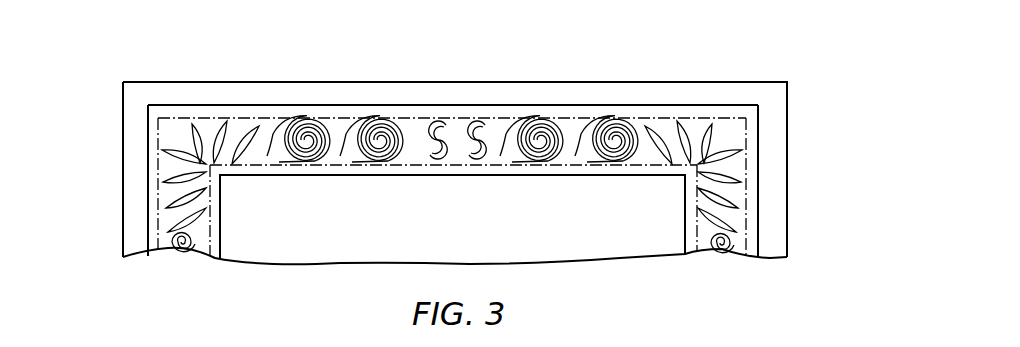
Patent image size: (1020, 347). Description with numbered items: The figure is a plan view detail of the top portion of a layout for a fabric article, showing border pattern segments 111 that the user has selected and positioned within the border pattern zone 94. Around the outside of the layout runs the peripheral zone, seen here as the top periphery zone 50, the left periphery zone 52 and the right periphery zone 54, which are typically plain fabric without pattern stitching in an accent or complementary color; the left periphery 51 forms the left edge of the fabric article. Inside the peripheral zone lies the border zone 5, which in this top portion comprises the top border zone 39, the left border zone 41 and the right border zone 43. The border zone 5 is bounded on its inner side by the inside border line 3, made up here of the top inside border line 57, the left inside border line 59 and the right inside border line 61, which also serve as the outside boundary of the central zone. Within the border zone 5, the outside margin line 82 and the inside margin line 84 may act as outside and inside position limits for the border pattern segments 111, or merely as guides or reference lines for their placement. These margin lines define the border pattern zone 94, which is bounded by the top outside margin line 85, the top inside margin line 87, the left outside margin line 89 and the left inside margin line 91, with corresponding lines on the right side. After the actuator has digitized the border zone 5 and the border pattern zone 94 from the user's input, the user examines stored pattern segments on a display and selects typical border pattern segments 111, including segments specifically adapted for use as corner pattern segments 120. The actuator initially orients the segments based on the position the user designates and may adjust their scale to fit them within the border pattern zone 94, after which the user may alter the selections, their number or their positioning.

The inside border line 3 is at (395, 176).
The border zone 5 is at (722, 138).
The top border zone 39 is at (213, 116).
The left border zone 41 is at (125, 225).
The right border zone 43 is at (738, 221).
The top periphery zone 50 is at (318, 94).
The left periphery 51 is at (123, 152).
The left periphery zone 52 is at (137, 207).
The right periphery zone 54 is at (773, 185).
The top inside border line 57 is at (448, 176).
The left inside border line 59 is at (220, 197).
The right inside border line 61 is at (684, 230).
The outside margin line 82 is at (187, 145).
The inside margin line 84 is at (293, 166).
The top outside margin line 85 is at (570, 120).
The top inside margin line 87 is at (513, 164).
The left outside margin line 89 is at (158, 190).
The left inside margin line 91 is at (222, 225).
The border pattern zone 94 is at (494, 134).
The border pattern segments 111 is at (200, 158).
The corner pattern segments 120 is at (192, 148).